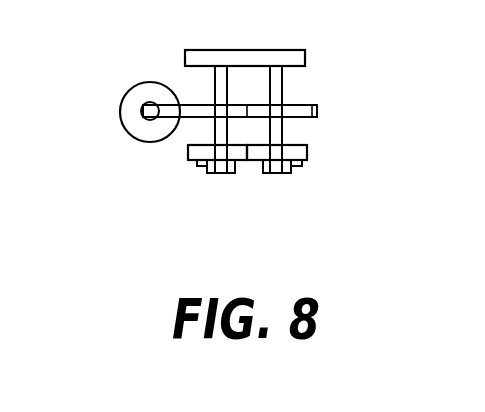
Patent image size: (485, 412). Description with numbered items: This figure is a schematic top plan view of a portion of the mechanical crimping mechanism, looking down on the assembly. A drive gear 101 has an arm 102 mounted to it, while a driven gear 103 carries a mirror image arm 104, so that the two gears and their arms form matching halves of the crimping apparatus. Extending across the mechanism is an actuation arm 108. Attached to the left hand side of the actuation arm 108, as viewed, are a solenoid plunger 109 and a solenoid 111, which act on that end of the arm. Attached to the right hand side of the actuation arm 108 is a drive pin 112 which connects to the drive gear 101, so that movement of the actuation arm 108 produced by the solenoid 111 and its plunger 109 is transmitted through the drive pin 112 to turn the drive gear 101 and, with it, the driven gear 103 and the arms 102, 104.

The drive gear 101 is at (310, 153).
The arm 102 is at (303, 168).
The driven gear 103 is at (188, 153).
The mirror image arm 104 is at (200, 167).
The actuation arm 108 is at (317, 111).
The solenoid plunger 109 is at (135, 96).
The solenoid 111 is at (121, 125).
The drive pin 112 is at (282, 94).